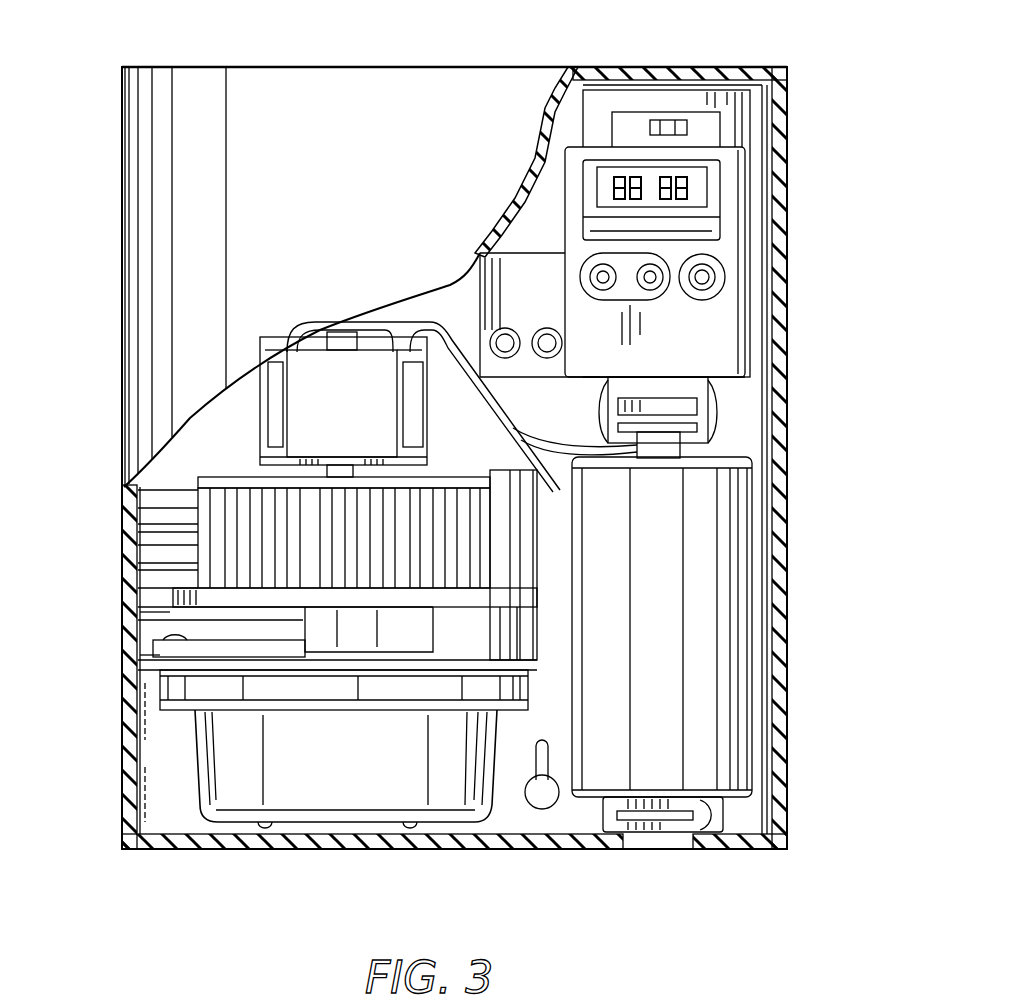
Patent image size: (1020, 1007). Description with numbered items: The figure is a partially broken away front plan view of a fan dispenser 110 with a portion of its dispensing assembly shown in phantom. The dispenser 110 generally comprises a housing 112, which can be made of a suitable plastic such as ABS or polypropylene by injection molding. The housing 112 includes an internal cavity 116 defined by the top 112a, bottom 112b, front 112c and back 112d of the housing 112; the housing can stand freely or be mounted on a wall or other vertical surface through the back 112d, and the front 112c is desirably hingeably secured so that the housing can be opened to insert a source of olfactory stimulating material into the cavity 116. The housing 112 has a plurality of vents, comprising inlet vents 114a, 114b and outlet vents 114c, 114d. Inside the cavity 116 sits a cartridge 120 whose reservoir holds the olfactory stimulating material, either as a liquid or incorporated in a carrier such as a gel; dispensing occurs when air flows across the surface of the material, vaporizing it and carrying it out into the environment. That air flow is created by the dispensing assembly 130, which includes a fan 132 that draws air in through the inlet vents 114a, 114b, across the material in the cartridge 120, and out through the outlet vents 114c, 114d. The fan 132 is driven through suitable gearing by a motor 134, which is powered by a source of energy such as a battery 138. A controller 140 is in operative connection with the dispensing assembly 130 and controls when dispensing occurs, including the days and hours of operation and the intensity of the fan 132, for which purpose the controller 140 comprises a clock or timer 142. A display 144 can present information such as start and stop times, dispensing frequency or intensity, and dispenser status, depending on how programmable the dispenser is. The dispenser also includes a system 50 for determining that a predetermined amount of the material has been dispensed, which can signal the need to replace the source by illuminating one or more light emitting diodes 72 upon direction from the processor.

The system for determining that a predetermined amount of olfactory stimulating mate 50 is at (727, 157).
The light emitting diodes 72 is at (547, 328).
The dispenser 110 is at (808, 275).
The housing 112 is at (788, 620).
The top 112a is at (440, 66).
The bottom 112b is at (332, 850).
The front 112c is at (322, 253).
The back 112d is at (520, 730).
The inlet vent 114a is at (152, 655).
The inlet vent 114b is at (155, 612).
The outlet vent 114c is at (153, 567).
The outlet vent 114d is at (153, 531).
The internal cavity 116 is at (167, 773).
The cartridge 120 is at (365, 773).
The dispensing assembly 130 is at (387, 496).
The fan 132 is at (415, 477).
The motor 134 is at (363, 403).
The battery 138 is at (748, 460).
The controller 140 is at (605, 197).
The clock or timer 142 is at (600, 148).
The display 144 is at (684, 165).